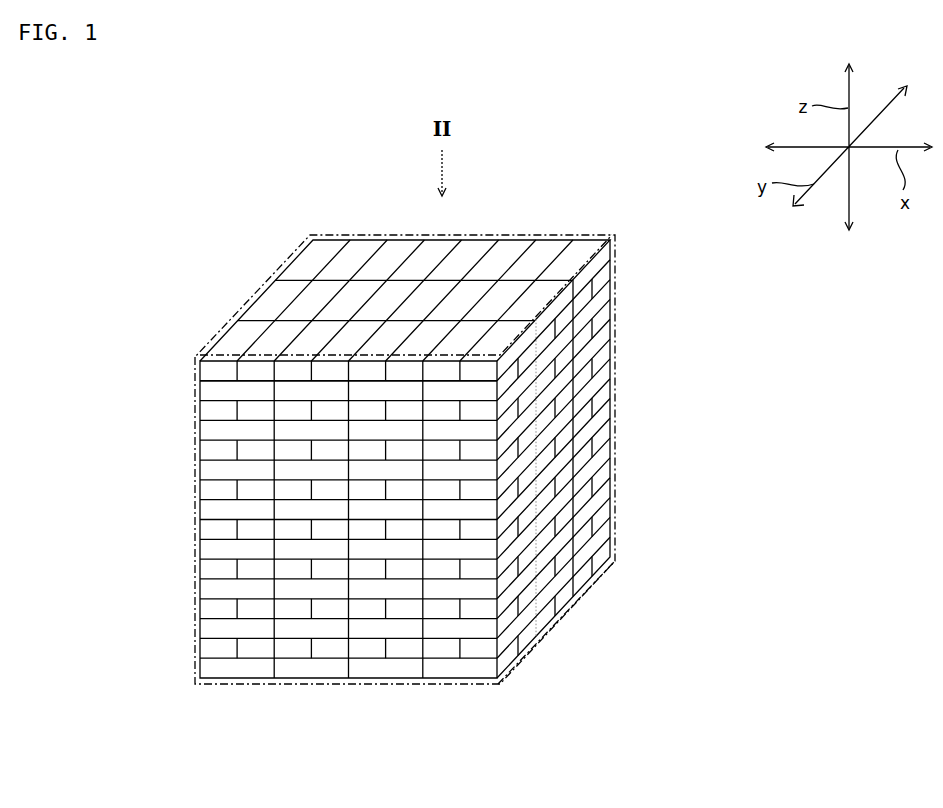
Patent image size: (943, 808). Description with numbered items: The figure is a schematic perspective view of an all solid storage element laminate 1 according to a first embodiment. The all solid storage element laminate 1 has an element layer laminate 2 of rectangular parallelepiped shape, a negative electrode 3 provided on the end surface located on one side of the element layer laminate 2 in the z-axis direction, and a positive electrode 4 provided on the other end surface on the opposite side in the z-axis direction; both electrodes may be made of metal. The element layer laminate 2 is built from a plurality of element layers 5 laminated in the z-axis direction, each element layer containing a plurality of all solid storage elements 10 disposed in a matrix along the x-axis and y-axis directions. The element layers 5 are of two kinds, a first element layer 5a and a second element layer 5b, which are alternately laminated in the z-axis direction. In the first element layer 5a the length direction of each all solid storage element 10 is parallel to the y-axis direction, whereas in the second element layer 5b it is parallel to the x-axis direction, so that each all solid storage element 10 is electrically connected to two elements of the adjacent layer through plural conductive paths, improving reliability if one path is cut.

The all solid storage element laminate 1 is at (578, 199).
The element layer laminate 2 is at (614, 293).
The negative electrode 3 is at (331, 232).
The positive electrode 4 is at (558, 620).
The element layers 5 is at (263, 505).
The first element layer 5a is at (197, 371).
The second element layer 5b is at (197, 392).
The all solid storage element 10 is at (611, 372).